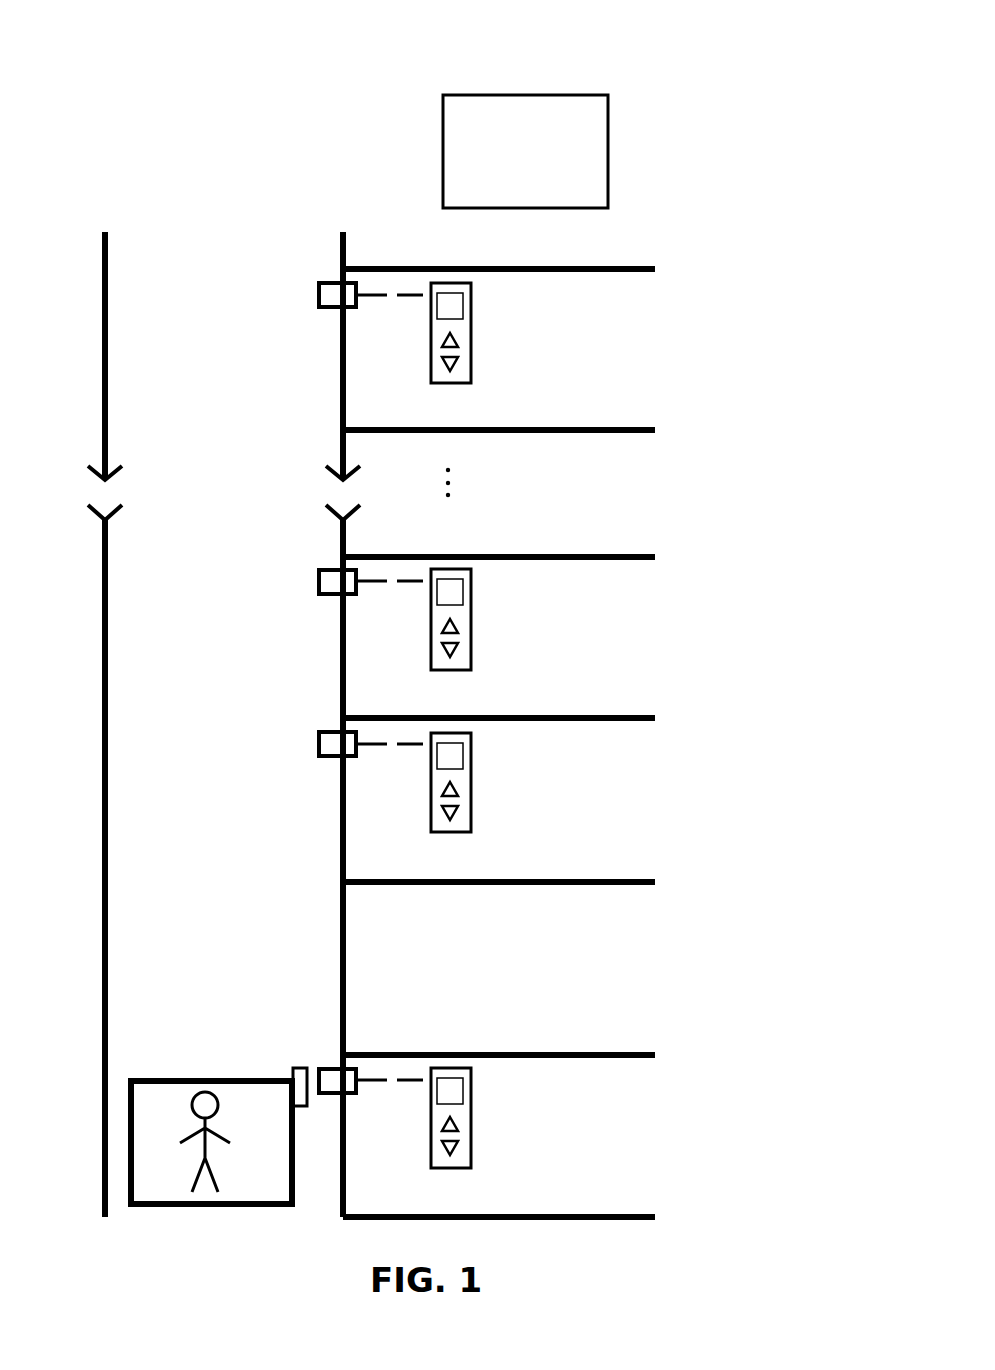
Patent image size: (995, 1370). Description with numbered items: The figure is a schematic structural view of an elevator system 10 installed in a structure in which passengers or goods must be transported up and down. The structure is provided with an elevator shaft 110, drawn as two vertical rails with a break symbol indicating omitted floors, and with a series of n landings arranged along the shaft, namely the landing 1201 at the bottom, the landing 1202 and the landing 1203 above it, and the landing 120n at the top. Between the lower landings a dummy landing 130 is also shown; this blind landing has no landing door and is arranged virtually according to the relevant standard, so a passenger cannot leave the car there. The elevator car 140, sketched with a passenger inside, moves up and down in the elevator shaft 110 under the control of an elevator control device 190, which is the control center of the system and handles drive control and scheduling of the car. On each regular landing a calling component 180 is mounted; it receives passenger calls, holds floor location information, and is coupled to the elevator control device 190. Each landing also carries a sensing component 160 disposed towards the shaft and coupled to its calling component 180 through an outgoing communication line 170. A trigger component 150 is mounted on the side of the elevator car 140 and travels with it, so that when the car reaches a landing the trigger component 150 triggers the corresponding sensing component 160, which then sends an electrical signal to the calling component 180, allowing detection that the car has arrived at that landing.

The elevator system 10 is at (126, 76).
The elevator shaft 110 is at (340, 418).
The landing 120n is at (645, 368).
The landing 1203 is at (645, 655).
The landing 1202 is at (645, 818).
The landing 1201 is at (645, 1153).
The dummy landing 130 is at (645, 950).
The elevator car 140 is at (168, 1078).
The trigger component 150 is at (293, 1067).
The sensing component 160 is at (317, 293).
The outgoing communication line 170 is at (403, 302).
The calling component 180 is at (472, 322).
The elevator control device 190 is at (608, 148).